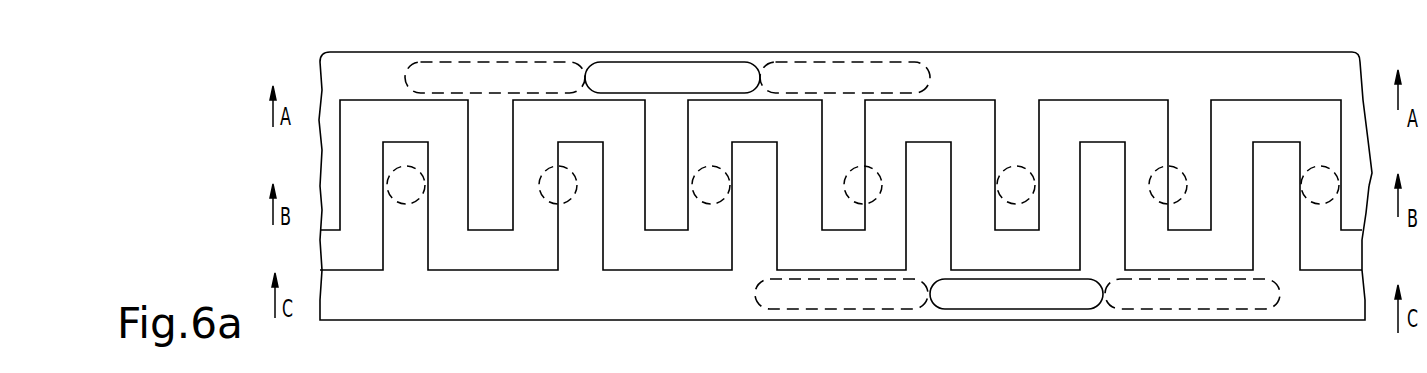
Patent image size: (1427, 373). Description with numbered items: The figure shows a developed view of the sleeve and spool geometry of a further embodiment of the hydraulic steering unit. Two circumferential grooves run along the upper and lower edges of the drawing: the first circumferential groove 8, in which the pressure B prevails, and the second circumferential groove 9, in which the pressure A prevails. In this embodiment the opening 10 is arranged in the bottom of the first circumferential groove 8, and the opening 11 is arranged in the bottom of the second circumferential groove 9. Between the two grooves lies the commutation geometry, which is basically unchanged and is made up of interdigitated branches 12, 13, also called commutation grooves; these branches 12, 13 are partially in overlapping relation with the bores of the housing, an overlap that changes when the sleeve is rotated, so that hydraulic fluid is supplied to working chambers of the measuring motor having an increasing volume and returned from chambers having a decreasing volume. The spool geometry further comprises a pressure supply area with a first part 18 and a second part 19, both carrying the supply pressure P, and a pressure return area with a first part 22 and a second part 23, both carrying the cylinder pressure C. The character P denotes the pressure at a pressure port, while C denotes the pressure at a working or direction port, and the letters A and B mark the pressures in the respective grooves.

The first circumferential groove 8 is at (1252, 77).
The second circumferential groove 9 is at (1322, 300).
The opening 10 is at (700, 77).
The opening 11 is at (1043, 297).
The branch 12 is at (482, 115).
The branch 13 is at (1102, 165).
The first part of pressure supply area 18 is at (812, 75).
The second part of pressure supply area 19 is at (883, 304).
The first part of pressure return area 22 is at (530, 73).
The second part of pressure return area 23 is at (1253, 292).